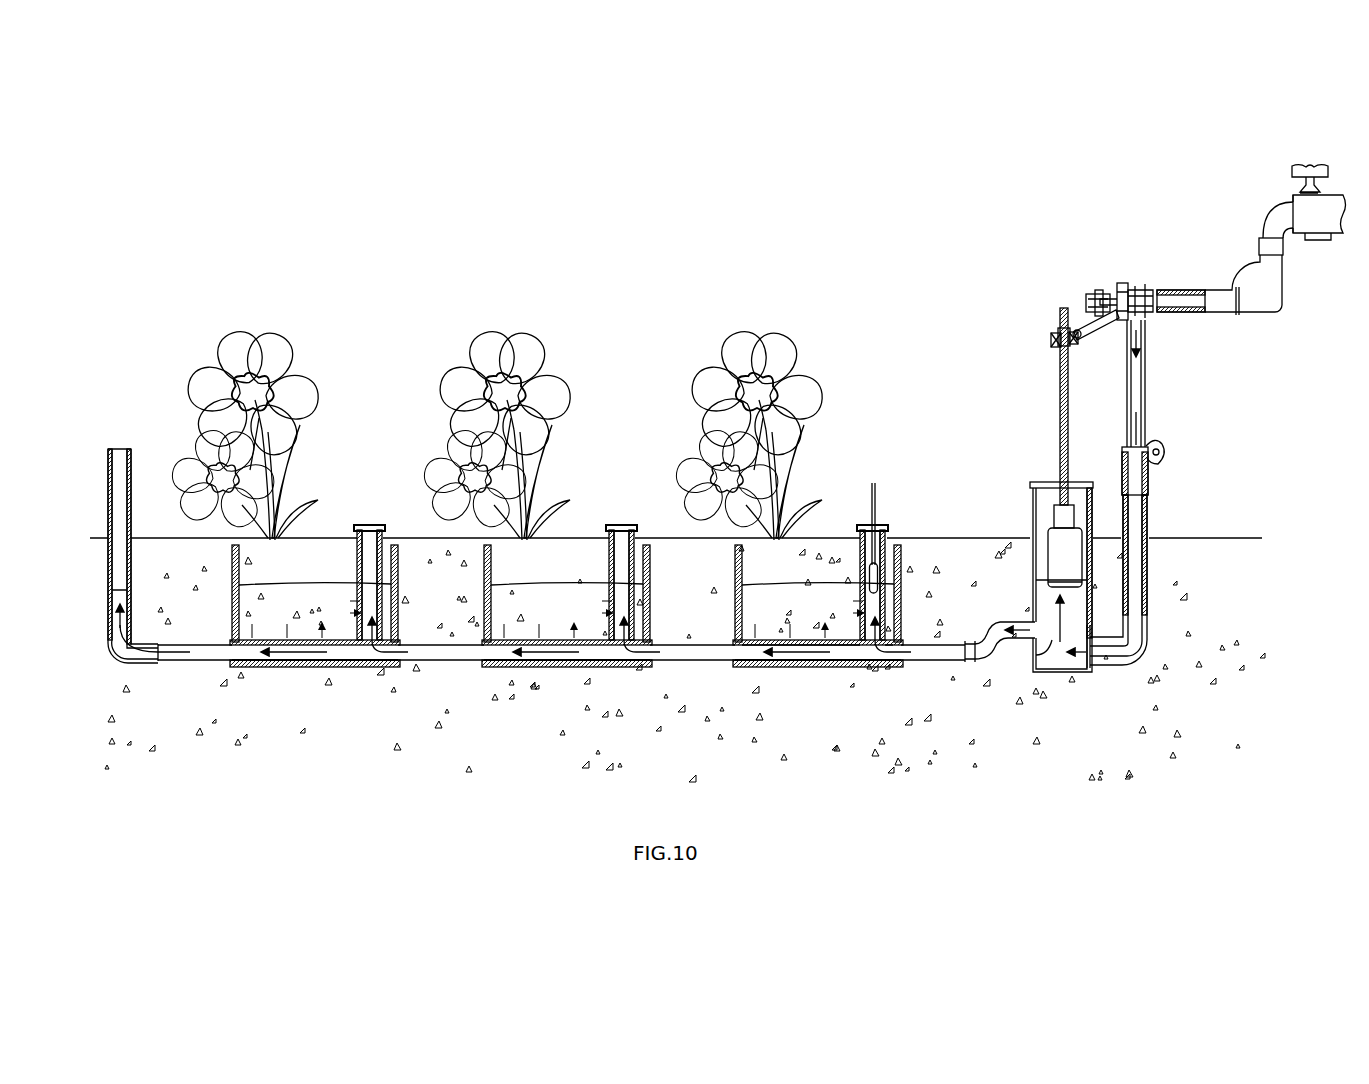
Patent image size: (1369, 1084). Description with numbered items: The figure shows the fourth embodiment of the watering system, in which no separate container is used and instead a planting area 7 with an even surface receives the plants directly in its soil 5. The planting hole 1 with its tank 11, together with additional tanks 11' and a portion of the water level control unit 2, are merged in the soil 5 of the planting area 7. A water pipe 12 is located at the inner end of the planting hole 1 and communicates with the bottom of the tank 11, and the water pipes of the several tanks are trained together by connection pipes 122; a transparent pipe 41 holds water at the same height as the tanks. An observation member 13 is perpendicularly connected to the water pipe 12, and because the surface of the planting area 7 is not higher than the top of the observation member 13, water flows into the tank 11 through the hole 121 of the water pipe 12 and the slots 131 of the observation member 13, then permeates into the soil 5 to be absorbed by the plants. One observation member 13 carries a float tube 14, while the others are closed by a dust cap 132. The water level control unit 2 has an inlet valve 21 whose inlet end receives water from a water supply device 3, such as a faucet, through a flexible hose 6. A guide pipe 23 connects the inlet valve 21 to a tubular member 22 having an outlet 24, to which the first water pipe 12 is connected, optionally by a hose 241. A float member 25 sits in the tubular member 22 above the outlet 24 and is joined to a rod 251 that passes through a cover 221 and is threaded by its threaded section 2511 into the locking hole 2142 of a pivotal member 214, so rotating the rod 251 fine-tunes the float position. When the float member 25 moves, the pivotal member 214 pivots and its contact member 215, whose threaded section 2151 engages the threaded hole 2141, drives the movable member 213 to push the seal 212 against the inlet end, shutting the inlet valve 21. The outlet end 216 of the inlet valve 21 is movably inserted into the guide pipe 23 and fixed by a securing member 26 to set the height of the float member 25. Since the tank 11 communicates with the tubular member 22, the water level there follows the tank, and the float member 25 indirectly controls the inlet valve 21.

The planting hole 1 is at (827, 629).
The tank 11 is at (798, 678).
The tank 11' is at (421, 682).
The water pipe 12 is at (857, 652).
The hole 121 is at (840, 647).
The connection pipe 122 is at (425, 662).
The observation member 13 is at (859, 545).
The slot 131 is at (860, 550).
The dust cap 132 is at (622, 525).
The float tube 14 is at (871, 490).
The water level control unit 2 is at (1103, 485).
The inlet valve 21 is at (1121, 264).
The seal 212 is at (1122, 284).
The movable member 213 is at (1110, 295).
The pivotal member 214 is at (1048, 320).
The threaded hole 2141 is at (1073, 330).
The locking hole 2142 is at (1028, 343).
The contact member 215 is at (1072, 281).
The threaded section 2151 is at (1098, 290).
The outlet end 216 is at (1147, 405).
The tubular member 22 is at (1045, 629).
The cover 221 is at (1040, 484).
The guide pipe 23 is at (1150, 495).
The outlet 24 is at (966, 718).
The hose 241 is at (1010, 640).
The float member 25 is at (1055, 520).
The rod 251 is at (1025, 406).
The threaded section 2511 is at (1058, 345).
The securing member 26 is at (1163, 445).
The water supply device 3 is at (1305, 232).
The transparent pipe 41 is at (108, 580).
The soil 5 is at (1250, 662).
The hose 6 is at (1275, 278).
The planting area 7 is at (1245, 527).